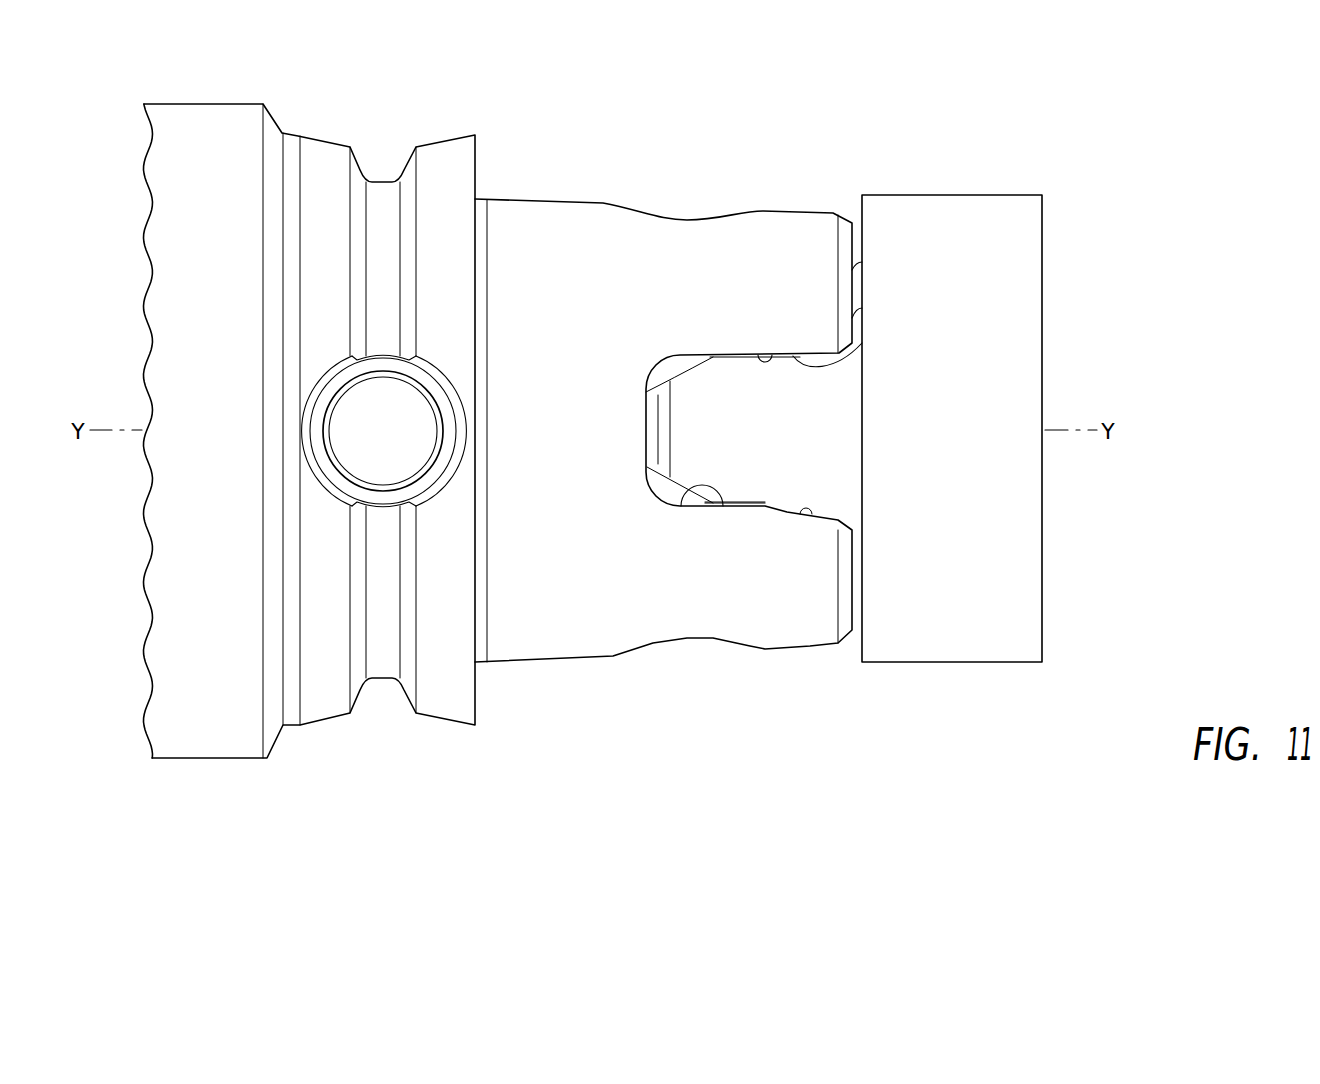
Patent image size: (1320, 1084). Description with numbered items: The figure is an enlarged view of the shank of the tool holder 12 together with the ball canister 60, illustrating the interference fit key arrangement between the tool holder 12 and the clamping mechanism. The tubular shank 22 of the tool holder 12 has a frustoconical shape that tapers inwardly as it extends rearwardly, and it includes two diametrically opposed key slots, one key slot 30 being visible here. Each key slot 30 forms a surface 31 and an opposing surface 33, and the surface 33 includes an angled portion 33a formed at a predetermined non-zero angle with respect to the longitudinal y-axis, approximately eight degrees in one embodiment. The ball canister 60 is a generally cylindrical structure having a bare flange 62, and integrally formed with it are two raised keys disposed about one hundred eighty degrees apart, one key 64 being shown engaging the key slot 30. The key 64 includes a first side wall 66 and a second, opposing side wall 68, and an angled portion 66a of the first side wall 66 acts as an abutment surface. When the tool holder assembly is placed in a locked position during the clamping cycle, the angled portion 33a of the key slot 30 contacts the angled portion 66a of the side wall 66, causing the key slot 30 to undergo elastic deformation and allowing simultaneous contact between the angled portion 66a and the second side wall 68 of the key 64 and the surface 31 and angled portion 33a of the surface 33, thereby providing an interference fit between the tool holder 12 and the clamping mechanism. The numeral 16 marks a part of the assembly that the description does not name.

The tool holder 12 is at (767, 77).
The housing body 16 is at (327, 790).
The tubular shank 22 is at (565, 200).
The key slot 30 is at (667, 353).
The surface 31 is at (757, 353).
The opposing surface 33 is at (677, 513).
The angled portion 33a is at (805, 517).
The ball canister 60 is at (1072, 198).
The bare flange 62 is at (855, 200).
The raised key 64 is at (718, 515).
The first side wall 66 is at (752, 512).
The angled portion 66a is at (836, 648).
The second side wall 68 is at (728, 353).